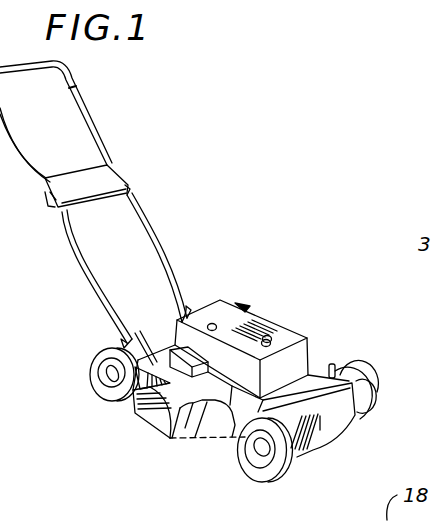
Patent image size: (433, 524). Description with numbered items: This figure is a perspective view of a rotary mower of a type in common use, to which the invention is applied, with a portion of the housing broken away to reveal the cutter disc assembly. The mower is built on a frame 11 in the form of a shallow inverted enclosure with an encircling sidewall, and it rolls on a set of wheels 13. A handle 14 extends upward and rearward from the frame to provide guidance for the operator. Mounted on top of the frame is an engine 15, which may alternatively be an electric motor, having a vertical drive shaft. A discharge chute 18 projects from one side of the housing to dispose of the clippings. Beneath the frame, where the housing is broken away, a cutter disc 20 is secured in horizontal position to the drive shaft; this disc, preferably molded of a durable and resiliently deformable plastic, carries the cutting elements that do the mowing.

The frame 11 is at (318, 394).
The wheels 13 is at (100, 383).
The handle 14 is at (157, 240).
The engine 15 is at (277, 320).
The discharge chute 18 is at (160, 407).
The cutter disc 20 is at (197, 415).